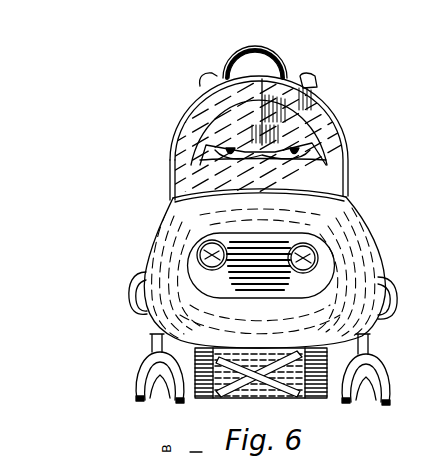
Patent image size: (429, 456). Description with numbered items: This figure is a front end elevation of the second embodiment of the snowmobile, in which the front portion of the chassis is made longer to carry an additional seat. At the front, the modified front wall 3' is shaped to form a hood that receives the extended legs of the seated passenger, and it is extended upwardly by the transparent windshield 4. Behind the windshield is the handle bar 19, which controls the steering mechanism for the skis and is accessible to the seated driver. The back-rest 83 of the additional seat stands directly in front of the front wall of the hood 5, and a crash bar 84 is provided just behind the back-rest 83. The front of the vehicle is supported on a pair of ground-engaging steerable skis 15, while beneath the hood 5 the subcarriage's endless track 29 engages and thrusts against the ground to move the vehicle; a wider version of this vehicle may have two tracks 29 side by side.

The crash bar 84 is at (284, 63).
The back-rest 83 is at (302, 80).
The handle bar 19 is at (330, 148).
The transparent windshield 4 is at (350, 172).
The front wall 3' is at (265, 268).
The ground-engaging steerable ski 15 is at (178, 403).
The endless track 29 is at (298, 399).
The hood 5 is at (426, 257).